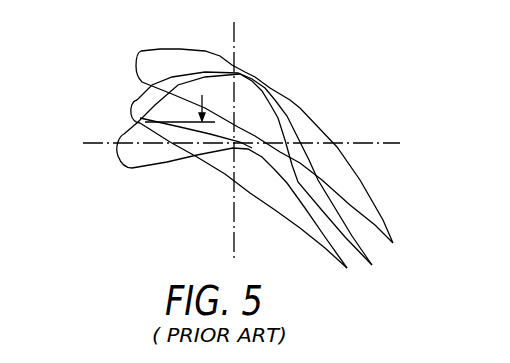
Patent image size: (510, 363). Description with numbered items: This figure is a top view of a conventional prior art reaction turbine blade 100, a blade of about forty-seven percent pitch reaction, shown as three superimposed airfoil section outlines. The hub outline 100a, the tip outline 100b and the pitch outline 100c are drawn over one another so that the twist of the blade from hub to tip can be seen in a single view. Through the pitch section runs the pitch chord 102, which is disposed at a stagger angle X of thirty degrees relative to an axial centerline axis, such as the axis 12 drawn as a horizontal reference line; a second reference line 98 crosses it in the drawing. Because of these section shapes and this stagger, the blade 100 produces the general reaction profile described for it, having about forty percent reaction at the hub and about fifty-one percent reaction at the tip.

The pivot axis 98 is at (235, 42).
The axis 12 is at (377, 143).
The turbine blade 100 is at (314, 120).
The hub outline 100a is at (130, 172).
The tip outline 100b is at (141, 51).
The pitch outline 100c is at (133, 107).
The pitch chord 102 is at (276, 210).
The stagger angle X is at (195, 160).